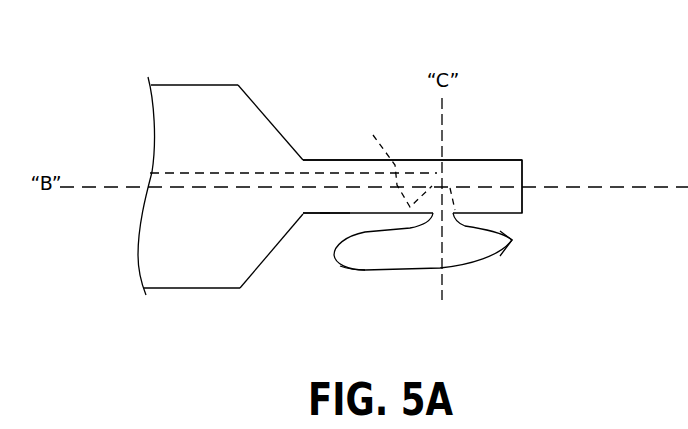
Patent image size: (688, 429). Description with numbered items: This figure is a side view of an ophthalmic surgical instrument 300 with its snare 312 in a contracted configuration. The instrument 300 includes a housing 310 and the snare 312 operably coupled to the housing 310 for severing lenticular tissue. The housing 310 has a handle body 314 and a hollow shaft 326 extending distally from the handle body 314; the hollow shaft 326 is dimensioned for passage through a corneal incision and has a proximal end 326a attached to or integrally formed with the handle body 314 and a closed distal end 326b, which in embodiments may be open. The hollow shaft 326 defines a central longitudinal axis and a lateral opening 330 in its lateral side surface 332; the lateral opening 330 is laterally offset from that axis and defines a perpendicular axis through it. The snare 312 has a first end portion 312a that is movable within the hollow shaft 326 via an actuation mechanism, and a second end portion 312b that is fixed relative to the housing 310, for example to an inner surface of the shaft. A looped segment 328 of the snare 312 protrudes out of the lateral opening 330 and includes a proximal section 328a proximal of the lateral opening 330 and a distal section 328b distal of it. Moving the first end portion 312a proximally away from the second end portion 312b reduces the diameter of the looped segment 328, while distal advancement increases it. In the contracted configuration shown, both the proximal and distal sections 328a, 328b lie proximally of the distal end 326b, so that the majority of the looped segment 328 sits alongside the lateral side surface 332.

The ophthalmic surgical instrument 300 is at (527, 54).
The housing 310 is at (311, 143).
The snare 312 is at (201, 163).
The first end portion 312a is at (163, 172).
The second end portion 312b is at (386, 159).
The handle body 314 is at (256, 99).
The hollow shaft 326 is at (423, 157).
The proximal end 326a is at (304, 216).
The distal end 326b is at (519, 160).
The looped segment 328 is at (480, 267).
The proximal section 328a is at (353, 271).
The distal section 328b is at (513, 240).
The lateral opening 330 is at (465, 200).
The lateral side surface 332 is at (333, 215).